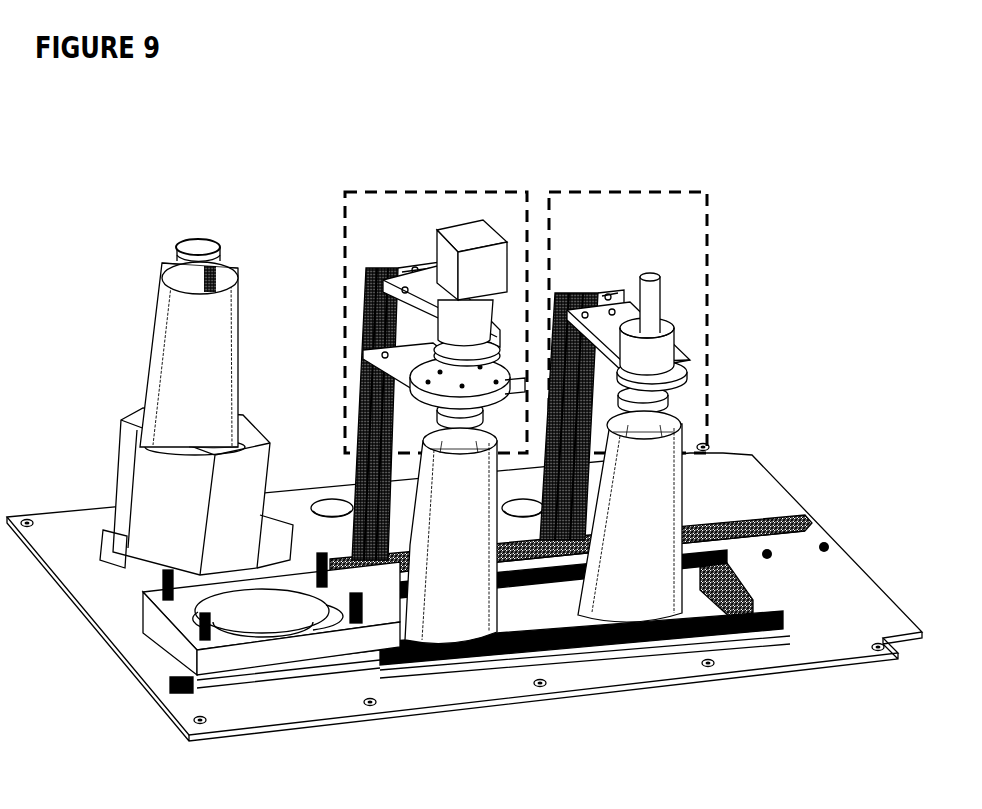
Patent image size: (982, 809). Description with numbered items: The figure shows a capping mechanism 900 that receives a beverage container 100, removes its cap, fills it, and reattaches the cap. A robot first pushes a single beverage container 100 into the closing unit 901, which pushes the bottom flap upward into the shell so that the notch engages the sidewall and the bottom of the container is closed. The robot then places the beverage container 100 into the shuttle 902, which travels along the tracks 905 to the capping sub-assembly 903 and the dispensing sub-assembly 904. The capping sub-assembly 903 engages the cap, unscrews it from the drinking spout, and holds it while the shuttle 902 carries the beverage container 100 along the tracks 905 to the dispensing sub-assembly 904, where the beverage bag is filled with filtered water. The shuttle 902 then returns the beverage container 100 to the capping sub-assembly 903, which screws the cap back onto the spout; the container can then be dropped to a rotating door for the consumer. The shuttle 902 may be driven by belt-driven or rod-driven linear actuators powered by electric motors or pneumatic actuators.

The beverage container 100 is at (207, 328).
The capping mechanism 900 is at (467, 51).
The closing unit 901 is at (185, 495).
The shuttle 902 is at (277, 655).
The capping sub-assembly 903 is at (401, 229).
The dispensing sub-assembly 904 is at (684, 229).
The tracks 905 is at (783, 603).